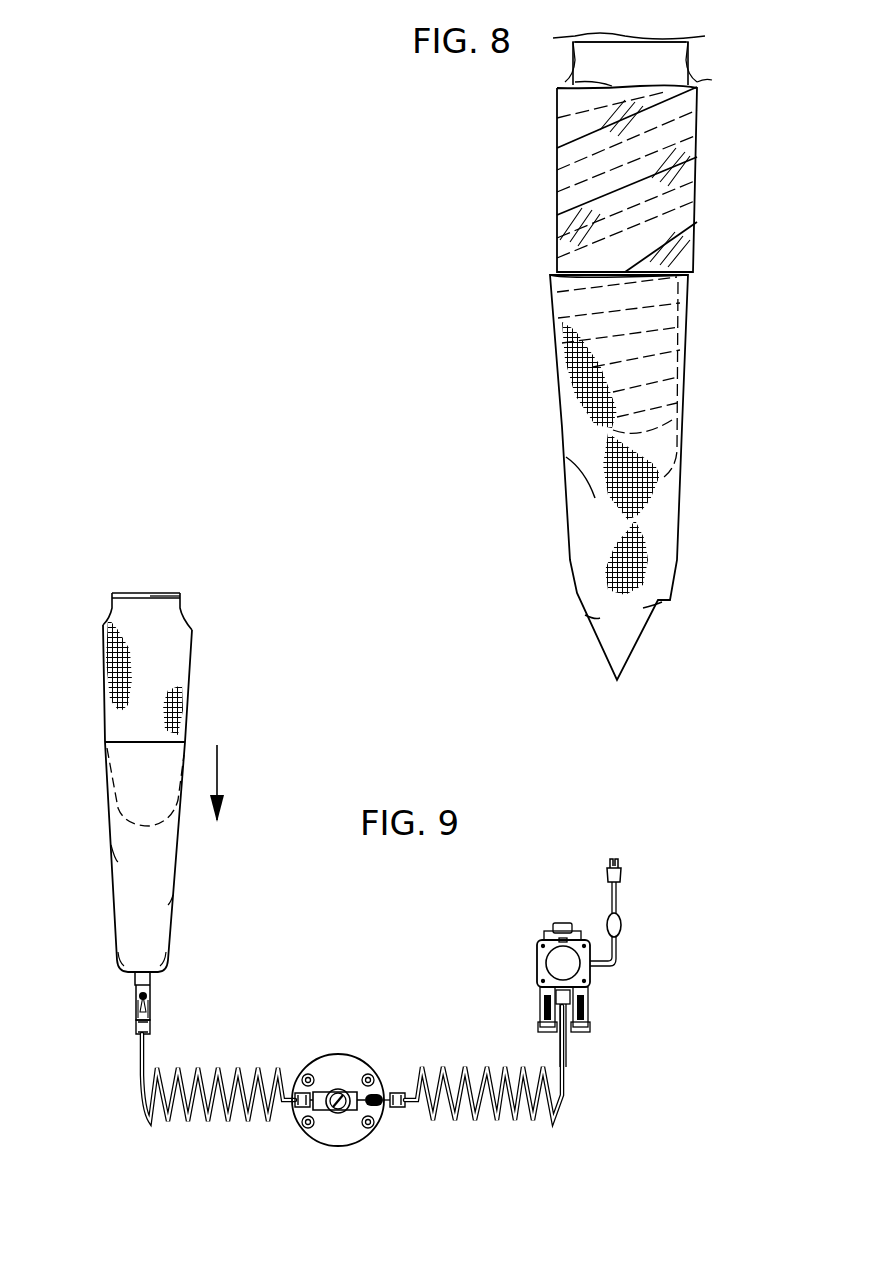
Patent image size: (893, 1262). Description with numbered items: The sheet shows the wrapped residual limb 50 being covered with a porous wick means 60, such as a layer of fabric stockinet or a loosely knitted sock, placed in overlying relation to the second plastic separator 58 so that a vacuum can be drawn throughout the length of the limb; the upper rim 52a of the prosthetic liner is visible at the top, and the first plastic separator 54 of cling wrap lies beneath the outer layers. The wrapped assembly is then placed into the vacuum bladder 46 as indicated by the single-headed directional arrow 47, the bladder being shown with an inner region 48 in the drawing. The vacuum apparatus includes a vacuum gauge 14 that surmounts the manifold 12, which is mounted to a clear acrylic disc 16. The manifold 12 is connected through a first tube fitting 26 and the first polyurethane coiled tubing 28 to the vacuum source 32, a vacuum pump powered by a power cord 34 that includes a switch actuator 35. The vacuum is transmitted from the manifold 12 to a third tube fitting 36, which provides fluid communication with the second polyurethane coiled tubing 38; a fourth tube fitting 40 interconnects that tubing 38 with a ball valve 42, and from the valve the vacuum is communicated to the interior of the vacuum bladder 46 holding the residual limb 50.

In FIG. 9, the manifold 12 is at (175, 675).
In FIG. 9, the vacuum gauge 14 is at (338, 1088).
In FIG. 9, the clear acrylic disc 16 is at (342, 1055).
In FIG. 9, the first tube fitting 26 is at (398, 1109).
In FIG. 9, the first polyurethane coiled tubing 28 is at (487, 1068).
In FIG. 9, the vacuum source 32 is at (537, 960).
In FIG. 9, the power cord 34 is at (620, 890).
In FIG. 9, the switch actuator 35 is at (622, 926).
In FIG. 9, the third tube fitting 36 is at (302, 1108).
In FIG. 9, the second polyurethane coiled tubing 38 is at (190, 1124).
In FIG. 9, the fourth tube fitting 40 is at (150, 1028).
In FIG. 9, the ball valve 42 is at (135, 995).
In FIG. 9, the vacuum bladder 46 is at (112, 848).
In FIG. 9, the single-headed directional arrow 47 is at (220, 780).
In FIG. 9, the liner 48 is at (105, 757).
In FIG. 8, the residual limb 50 is at (597, 37).
In FIG. 9, the residual limb 50 is at (140, 595).
In FIG. 8, the upper rim 52a is at (590, 82).
In FIG. 9, the upper rim 52a is at (180, 597).
In FIG. 8, the first plastic separator 54 is at (692, 70).
In FIG. 8, the second plastic separator 58 is at (557, 165).
In FIG. 8, the porous wick means 60 is at (568, 475).
In FIG. 9, the porous wick means 60 is at (112, 665).